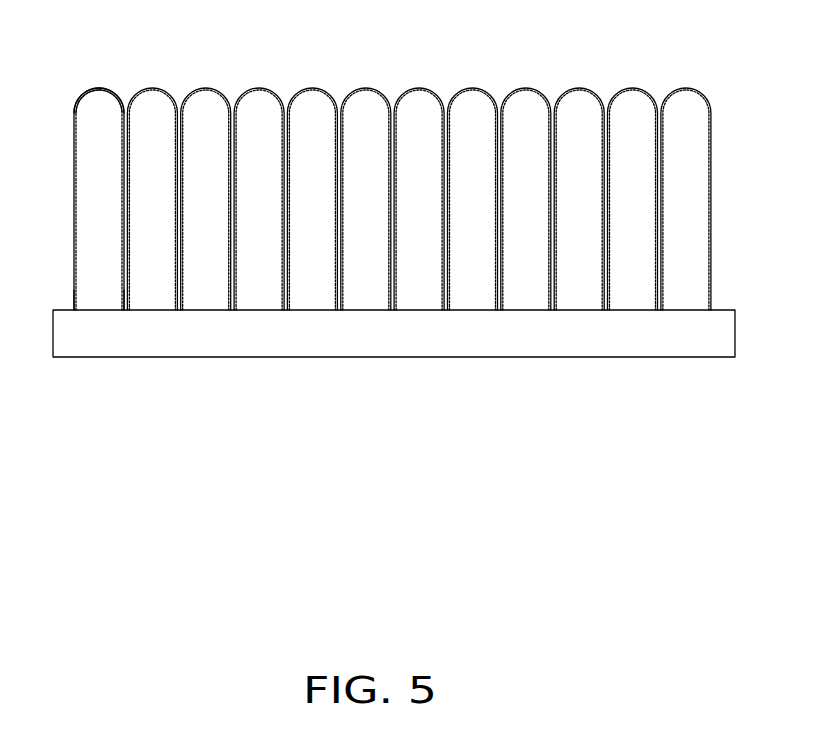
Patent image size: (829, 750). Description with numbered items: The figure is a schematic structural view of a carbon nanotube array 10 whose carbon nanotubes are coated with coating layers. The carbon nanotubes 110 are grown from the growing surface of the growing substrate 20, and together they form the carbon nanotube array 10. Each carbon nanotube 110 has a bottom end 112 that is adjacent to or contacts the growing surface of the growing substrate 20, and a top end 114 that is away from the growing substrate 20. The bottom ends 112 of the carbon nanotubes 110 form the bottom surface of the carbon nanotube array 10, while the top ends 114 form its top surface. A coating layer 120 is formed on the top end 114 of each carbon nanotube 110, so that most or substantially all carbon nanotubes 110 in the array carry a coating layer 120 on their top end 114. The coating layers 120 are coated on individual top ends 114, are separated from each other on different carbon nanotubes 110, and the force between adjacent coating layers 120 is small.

The carbon nanotube array 10 is at (728, 177).
The growing substrate 20 is at (644, 347).
The carbon nanotube 110 is at (93, 173).
The bottom end 112 is at (102, 309).
The top end 114 is at (97, 93).
The coating layer 120 is at (105, 89).